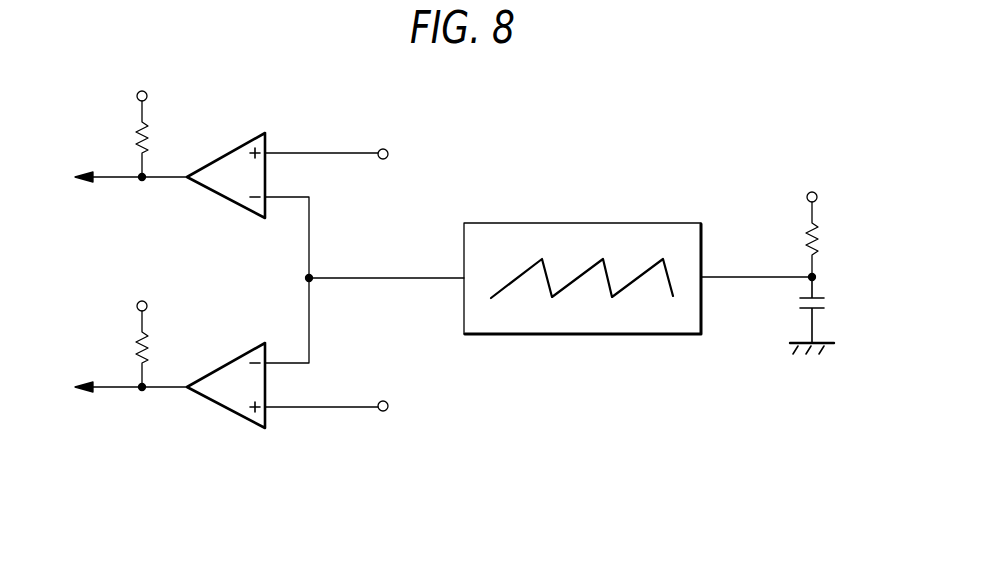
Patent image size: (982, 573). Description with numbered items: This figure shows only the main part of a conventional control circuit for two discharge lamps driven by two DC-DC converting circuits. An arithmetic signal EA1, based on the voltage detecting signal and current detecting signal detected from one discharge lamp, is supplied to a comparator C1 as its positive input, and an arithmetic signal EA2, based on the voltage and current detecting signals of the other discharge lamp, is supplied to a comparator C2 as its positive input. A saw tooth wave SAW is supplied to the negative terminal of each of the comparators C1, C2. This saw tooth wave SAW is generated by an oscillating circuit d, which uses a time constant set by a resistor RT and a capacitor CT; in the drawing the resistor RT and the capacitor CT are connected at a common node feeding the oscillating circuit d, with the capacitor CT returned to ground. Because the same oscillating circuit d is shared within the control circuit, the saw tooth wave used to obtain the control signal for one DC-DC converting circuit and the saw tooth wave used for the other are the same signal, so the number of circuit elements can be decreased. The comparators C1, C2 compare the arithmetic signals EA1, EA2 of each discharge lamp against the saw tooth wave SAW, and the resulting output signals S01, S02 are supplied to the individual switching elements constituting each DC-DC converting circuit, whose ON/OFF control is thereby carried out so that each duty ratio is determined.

The comparator C1 is at (226, 153).
The comparator C2 is at (226, 363).
The output signal S01 is at (109, 142).
The output signal S02 is at (109, 352).
The arithmetic signal EA1 is at (350, 154).
The arithmetic signal EA2 is at (350, 406).
The saw tooth wave SAW is at (364, 280).
The oscillating circuit d is at (583, 223).
The resistor RT is at (817, 230).
The capacitor CT is at (828, 303).